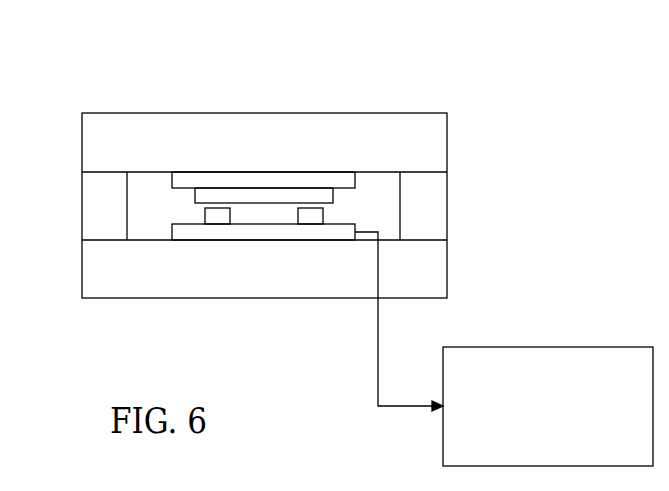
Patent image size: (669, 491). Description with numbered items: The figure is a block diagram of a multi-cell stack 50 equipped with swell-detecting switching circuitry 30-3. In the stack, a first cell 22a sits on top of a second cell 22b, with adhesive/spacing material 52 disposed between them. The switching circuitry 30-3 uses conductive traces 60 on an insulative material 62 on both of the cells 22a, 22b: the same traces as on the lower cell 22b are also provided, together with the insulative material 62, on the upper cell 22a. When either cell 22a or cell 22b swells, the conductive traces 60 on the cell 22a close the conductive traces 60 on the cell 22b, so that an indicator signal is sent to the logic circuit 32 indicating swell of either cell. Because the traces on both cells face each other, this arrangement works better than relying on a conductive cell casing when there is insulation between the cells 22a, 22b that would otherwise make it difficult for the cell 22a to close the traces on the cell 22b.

The multi-cell stack 50 is at (523, 90).
The first cell 22a is at (447, 143).
The second cell 22b is at (447, 270).
The adhesive/spacing material 52 is at (82, 207).
The insulative material 62 is at (172, 181).
The conductive traces 60 is at (210, 196).
The switching circuitry 30-3 is at (362, 212).
The logic circuit 32 is at (601, 347).